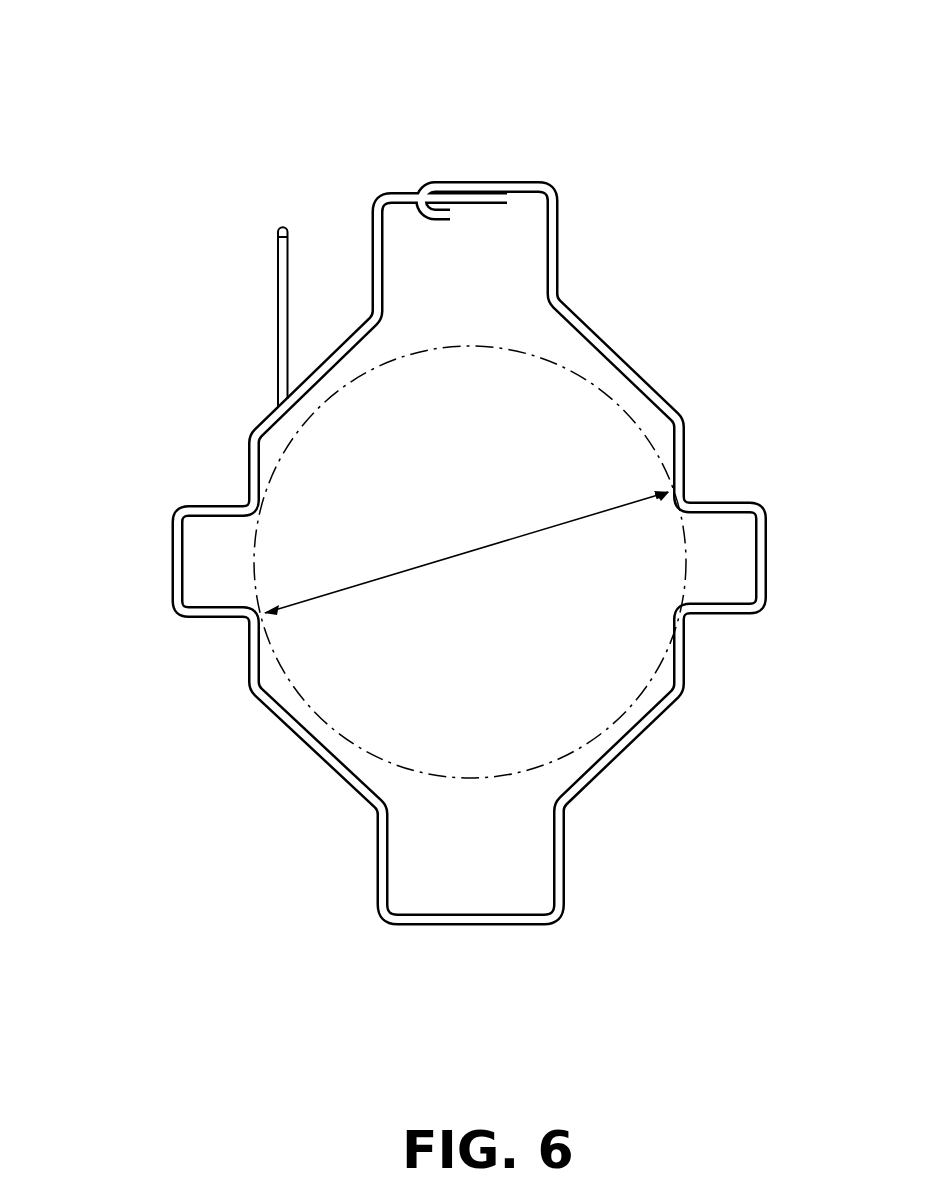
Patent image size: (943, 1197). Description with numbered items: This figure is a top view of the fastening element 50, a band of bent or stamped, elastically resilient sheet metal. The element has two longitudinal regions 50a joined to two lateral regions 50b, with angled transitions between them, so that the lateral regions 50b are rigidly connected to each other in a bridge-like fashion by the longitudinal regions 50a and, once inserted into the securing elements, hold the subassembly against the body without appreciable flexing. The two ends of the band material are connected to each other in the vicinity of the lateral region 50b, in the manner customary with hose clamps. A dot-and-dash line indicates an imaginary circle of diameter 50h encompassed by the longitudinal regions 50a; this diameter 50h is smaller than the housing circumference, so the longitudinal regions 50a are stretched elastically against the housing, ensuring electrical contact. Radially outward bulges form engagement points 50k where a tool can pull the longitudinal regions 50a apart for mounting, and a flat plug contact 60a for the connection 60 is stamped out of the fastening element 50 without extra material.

The fastening element 50 is at (668, 150).
The lateral region 50b is at (493, 175).
The longitudinal region 50a is at (690, 450).
The engagement point 50k is at (757, 503).
The diameter 50h is at (505, 541).
The connection 60 is at (275, 287).
The flat plug contact 60a is at (285, 320).